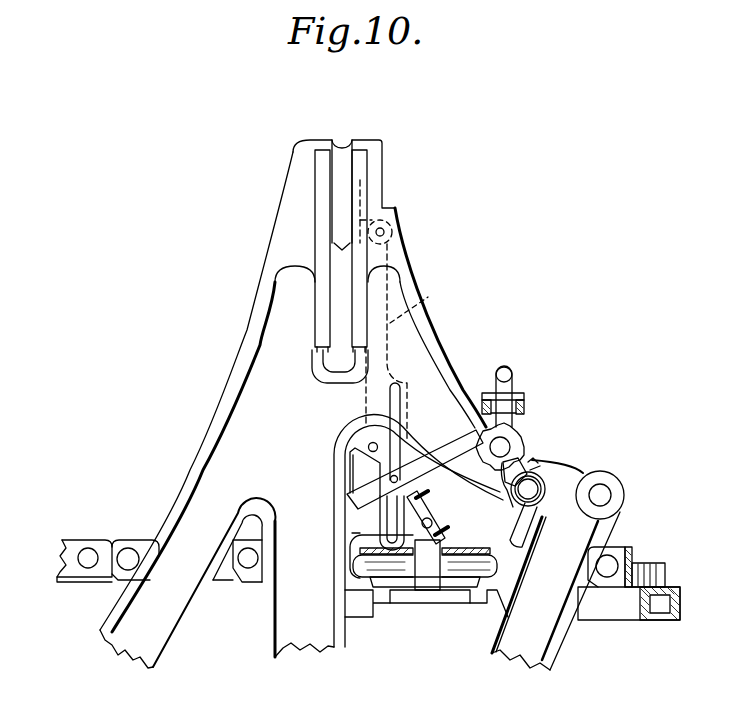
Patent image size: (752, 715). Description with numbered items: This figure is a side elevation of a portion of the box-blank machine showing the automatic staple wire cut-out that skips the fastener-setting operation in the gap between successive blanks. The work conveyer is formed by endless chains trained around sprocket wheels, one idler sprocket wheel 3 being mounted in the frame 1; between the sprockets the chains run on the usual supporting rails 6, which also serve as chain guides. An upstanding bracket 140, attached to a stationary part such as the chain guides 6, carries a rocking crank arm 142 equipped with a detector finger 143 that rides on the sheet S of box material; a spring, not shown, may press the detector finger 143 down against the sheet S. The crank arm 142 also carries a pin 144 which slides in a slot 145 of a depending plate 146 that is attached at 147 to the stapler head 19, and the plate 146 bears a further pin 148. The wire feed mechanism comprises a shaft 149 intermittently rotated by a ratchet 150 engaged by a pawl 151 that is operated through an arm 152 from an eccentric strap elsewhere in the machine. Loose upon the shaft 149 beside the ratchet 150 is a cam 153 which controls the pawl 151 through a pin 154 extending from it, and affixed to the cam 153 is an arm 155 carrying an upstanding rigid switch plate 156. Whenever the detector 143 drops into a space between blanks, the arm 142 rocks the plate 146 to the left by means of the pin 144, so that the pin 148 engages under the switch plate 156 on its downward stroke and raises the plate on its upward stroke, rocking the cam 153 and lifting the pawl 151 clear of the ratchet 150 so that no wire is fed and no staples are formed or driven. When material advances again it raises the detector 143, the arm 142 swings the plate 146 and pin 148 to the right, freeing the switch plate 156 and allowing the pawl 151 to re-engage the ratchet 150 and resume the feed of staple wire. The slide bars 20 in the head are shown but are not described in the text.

The frame 1 is at (267, 347).
The sprocket wheel 3 is at (78, 580).
The supporting rail 6 is at (637, 598).
The stapler head 19 is at (340, 182).
The slide bars 20 is at (322, 240).
The upstanding bracket 140 is at (430, 578).
The rocking crank arm 142 is at (436, 511).
The detector finger 143 is at (372, 541).
The pin 144 is at (396, 476).
The slot 145 is at (397, 434).
The depending plate 146 is at (428, 299).
The attachment point 147 is at (400, 223).
The pin 148 is at (369, 445).
The shaft 149 is at (512, 437).
The ratchet 150 is at (506, 445).
The pawl 151 is at (517, 476).
The arm 152 is at (523, 532).
The cam 153 is at (533, 458).
The pin 154 is at (538, 465).
The arm 155 is at (352, 533).
The switch plate 156 is at (355, 477).
The sheet S is at (455, 549).